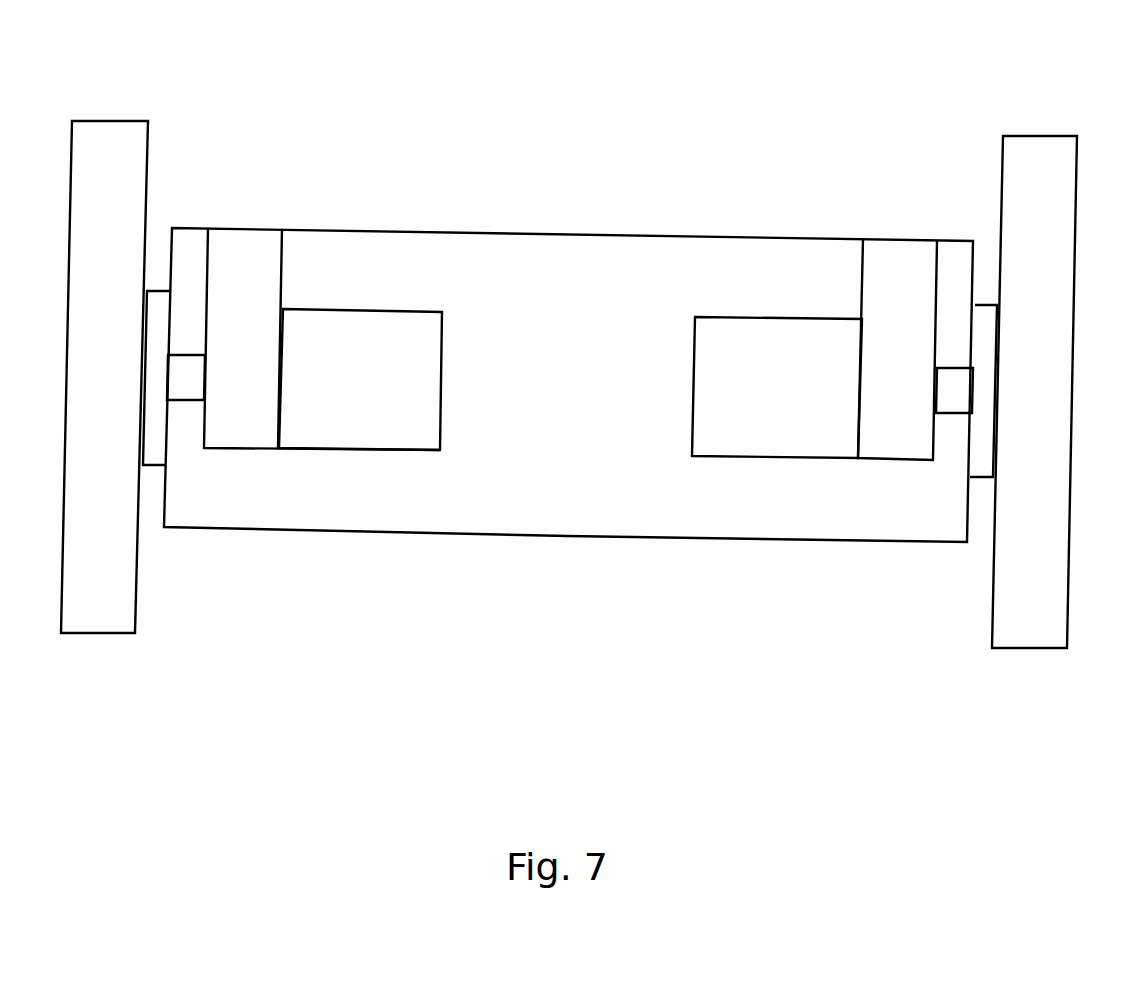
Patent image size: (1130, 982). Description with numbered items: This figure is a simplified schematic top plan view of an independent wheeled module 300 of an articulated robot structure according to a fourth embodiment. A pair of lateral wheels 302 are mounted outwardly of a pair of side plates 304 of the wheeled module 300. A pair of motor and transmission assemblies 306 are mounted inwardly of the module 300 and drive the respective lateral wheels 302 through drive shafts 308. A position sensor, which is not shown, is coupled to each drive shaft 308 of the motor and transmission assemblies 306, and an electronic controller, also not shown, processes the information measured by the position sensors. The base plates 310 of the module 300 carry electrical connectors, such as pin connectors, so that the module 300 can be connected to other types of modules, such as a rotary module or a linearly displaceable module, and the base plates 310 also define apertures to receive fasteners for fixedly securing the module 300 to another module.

The wheeled module 300 is at (567, 537).
The lateral wheels 302 is at (90, 642).
The side plates 304 is at (176, 269).
The motor and transmission assemblies 306 is at (348, 368).
The drive shaft 308 is at (178, 378).
The base plates 310 is at (573, 231).